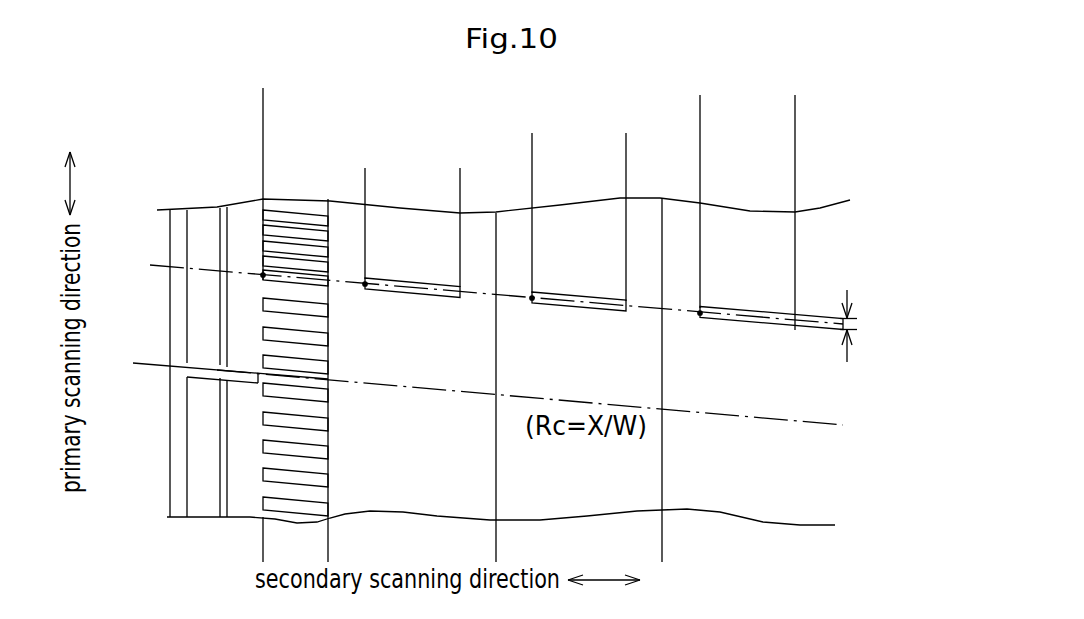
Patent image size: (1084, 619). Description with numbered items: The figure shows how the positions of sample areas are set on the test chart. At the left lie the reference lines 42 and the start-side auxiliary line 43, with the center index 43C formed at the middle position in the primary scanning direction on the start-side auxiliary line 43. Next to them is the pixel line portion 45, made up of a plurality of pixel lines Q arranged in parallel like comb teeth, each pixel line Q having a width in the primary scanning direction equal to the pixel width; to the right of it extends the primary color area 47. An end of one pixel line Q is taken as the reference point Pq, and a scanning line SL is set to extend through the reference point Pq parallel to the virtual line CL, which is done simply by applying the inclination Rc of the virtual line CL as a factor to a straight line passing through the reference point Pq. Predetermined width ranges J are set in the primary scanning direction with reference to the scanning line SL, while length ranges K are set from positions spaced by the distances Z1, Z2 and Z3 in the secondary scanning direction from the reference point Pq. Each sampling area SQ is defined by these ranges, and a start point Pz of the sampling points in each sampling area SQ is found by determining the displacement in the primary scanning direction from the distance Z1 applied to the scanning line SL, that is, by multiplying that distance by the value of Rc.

The reference lines 42 is at (175, 487).
The start-side auxiliary line 43 is at (220, 232).
The center index 43C is at (207, 364).
The pixel line portion 45 is at (328, 554).
The primary color area 47 is at (496, 554).
The pixel line Q is at (322, 475).
The reference point Pq is at (263, 275).
The sampling start point Pz is at (365, 285).
The sampling area SQ is at (430, 302).
The scanning line SL is at (813, 318).
The virtual line CL is at (773, 421).
The width range J is at (850, 327).
The distance Z1 is at (365, 179).
The distance Z2 is at (532, 143).
The distance Z3 is at (700, 106).
The length range K is at (460, 179).